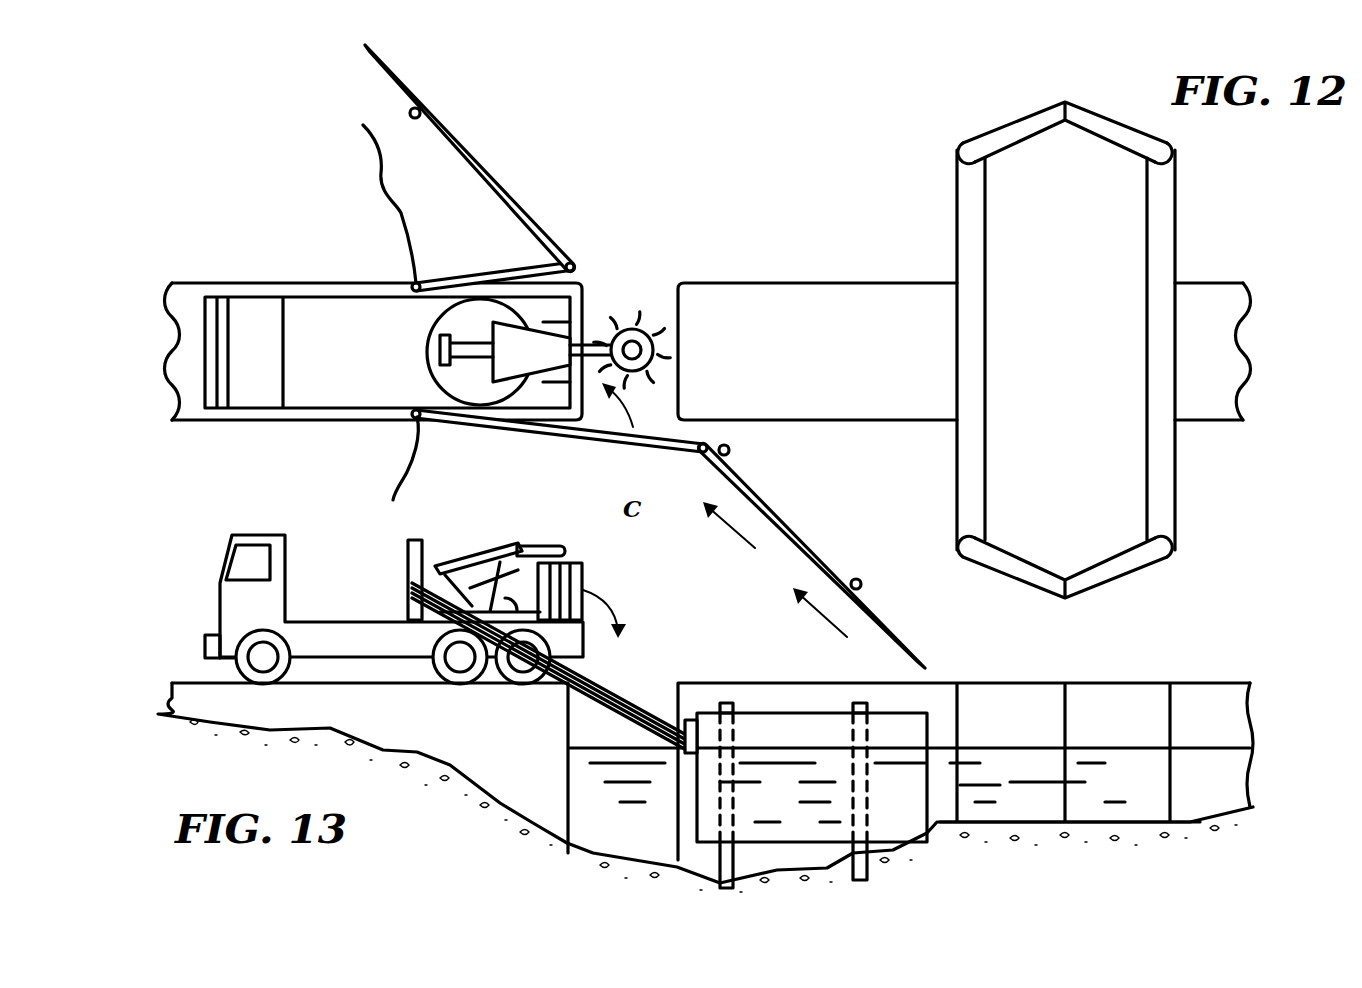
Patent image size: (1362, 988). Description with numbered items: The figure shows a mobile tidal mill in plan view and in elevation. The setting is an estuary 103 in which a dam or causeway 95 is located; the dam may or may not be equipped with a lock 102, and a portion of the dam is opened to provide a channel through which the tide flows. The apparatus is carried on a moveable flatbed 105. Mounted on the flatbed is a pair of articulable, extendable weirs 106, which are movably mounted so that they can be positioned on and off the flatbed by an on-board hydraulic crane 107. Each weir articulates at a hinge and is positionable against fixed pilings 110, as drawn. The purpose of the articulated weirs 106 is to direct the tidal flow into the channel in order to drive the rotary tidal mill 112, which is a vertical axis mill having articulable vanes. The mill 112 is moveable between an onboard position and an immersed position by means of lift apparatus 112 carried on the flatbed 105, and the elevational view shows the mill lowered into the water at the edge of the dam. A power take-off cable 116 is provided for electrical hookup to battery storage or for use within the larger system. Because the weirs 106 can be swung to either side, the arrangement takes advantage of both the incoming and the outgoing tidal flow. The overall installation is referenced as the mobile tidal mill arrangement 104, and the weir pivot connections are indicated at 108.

In FIG. 12, the dam or causeway 95 is at (843, 362).
In FIG. 13, the dam or causeway 95 is at (772, 698).
In FIG. 12, the lock 102 is at (1097, 127).
In FIG. 13, the lock 102 is at (1097, 705).
In FIG. 12, the estuary 103 is at (752, 198).
In FIG. 12, the loading system 104 is at (516, 132).
In FIG. 12, the moveable flatbed 105 is at (333, 318).
In FIG. 13, the moveable flatbed 105 is at (365, 633).
In FIG. 12, the articulable extendable weir 106 is at (518, 208).
In FIG. 13, the articulable extendable weir 106 is at (820, 747).
In FIG. 12, the on-board hydraulic crane 107 is at (472, 283).
In FIG. 13, the on-board hydraulic crane 107 is at (630, 694).
In FIG. 12, the pivot 108 is at (600, 288).
In FIG. 13, the pivot 108 is at (695, 715).
In FIG. 12, the fixed piling 110 is at (417, 119).
In FIG. 12, the rotary tidal mill 112 is at (652, 352).
In FIG. 13, the rotary tidal mill 112 is at (577, 572).
In FIG. 12, the power take-off cable 116 is at (416, 465).